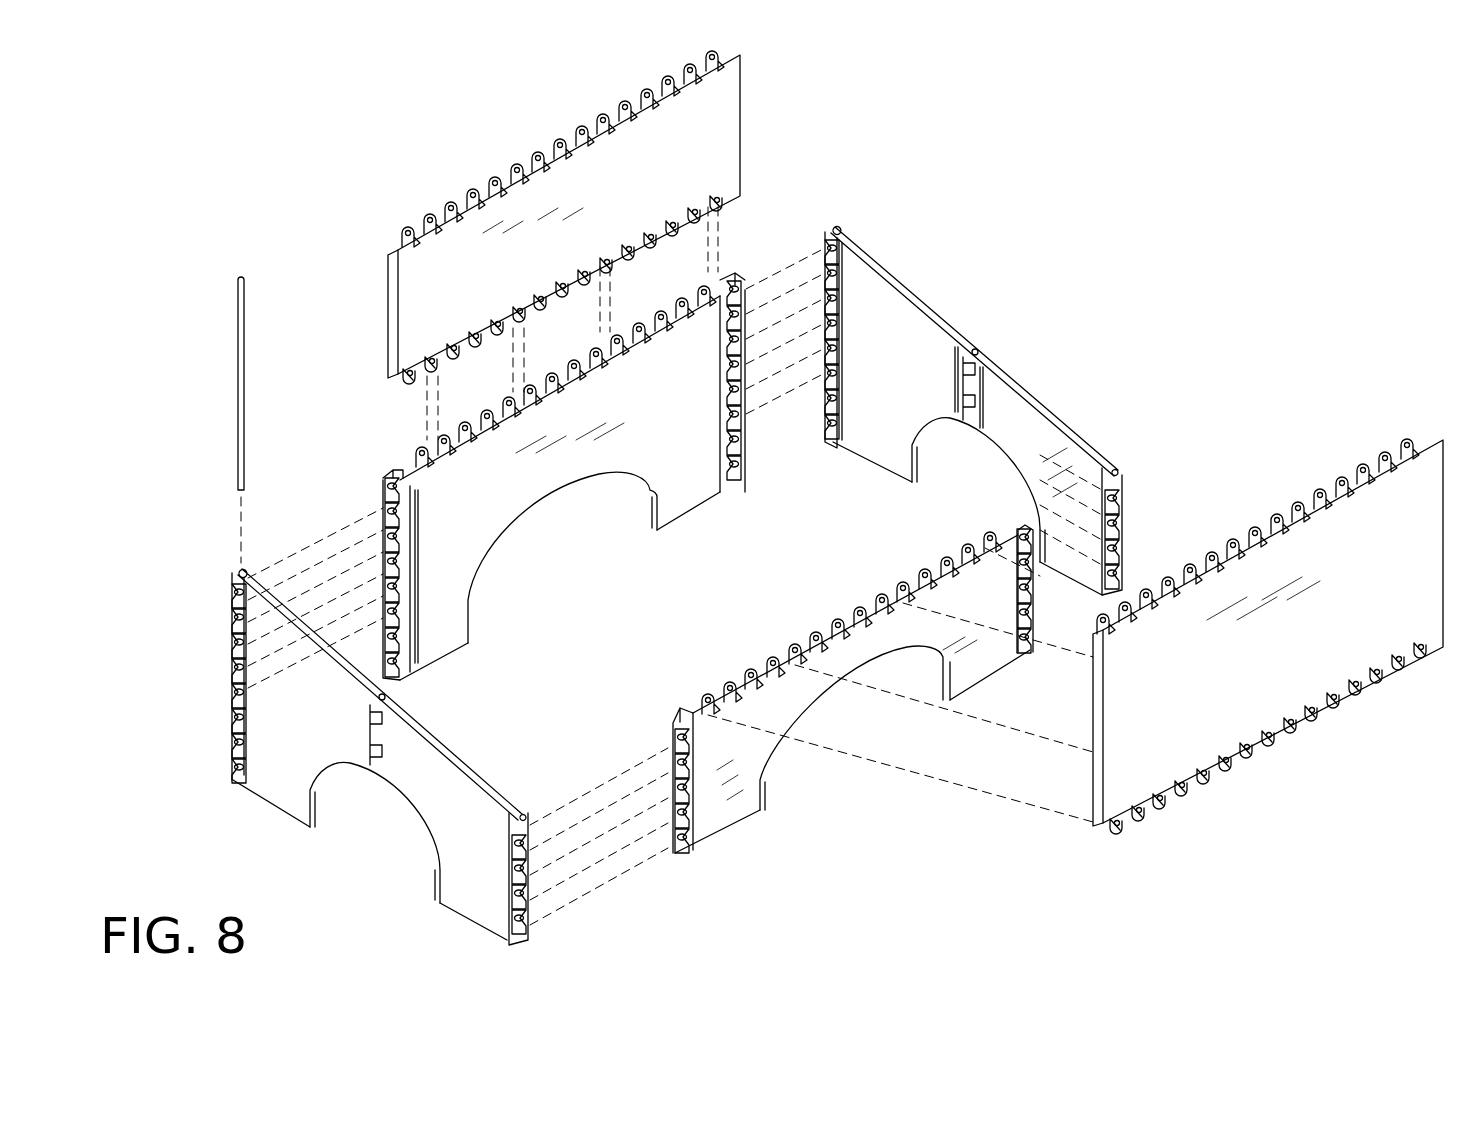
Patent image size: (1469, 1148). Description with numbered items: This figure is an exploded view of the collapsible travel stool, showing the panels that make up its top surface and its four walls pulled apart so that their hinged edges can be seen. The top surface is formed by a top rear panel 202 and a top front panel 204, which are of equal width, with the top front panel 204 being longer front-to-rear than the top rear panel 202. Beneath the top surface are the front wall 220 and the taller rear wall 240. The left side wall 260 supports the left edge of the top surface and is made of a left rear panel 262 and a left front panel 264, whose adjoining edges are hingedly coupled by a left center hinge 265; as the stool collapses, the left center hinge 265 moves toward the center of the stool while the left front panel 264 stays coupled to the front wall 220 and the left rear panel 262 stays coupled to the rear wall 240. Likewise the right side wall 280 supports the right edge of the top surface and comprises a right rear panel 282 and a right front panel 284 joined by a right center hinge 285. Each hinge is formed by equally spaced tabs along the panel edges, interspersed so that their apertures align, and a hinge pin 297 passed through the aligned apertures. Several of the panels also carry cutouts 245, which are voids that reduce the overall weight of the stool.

The top rear panel 202 is at (705, 141).
The top front panel 204 is at (1426, 490).
The front wall 220 is at (1018, 693).
The rear wall 240 is at (732, 520).
The cutouts 245 is at (638, 477).
The left side wall 260 is at (394, 767).
The left rear panel 262 is at (253, 672).
The left front panel 264 is at (480, 888).
The left center hinge 265 is at (321, 729).
The right side wall 280 is at (1017, 396).
The right rear panel 282 is at (885, 445).
The right front panel 284 is at (1073, 543).
The right center hinge 285 is at (963, 378).
The hinge pin 297 is at (240, 380).